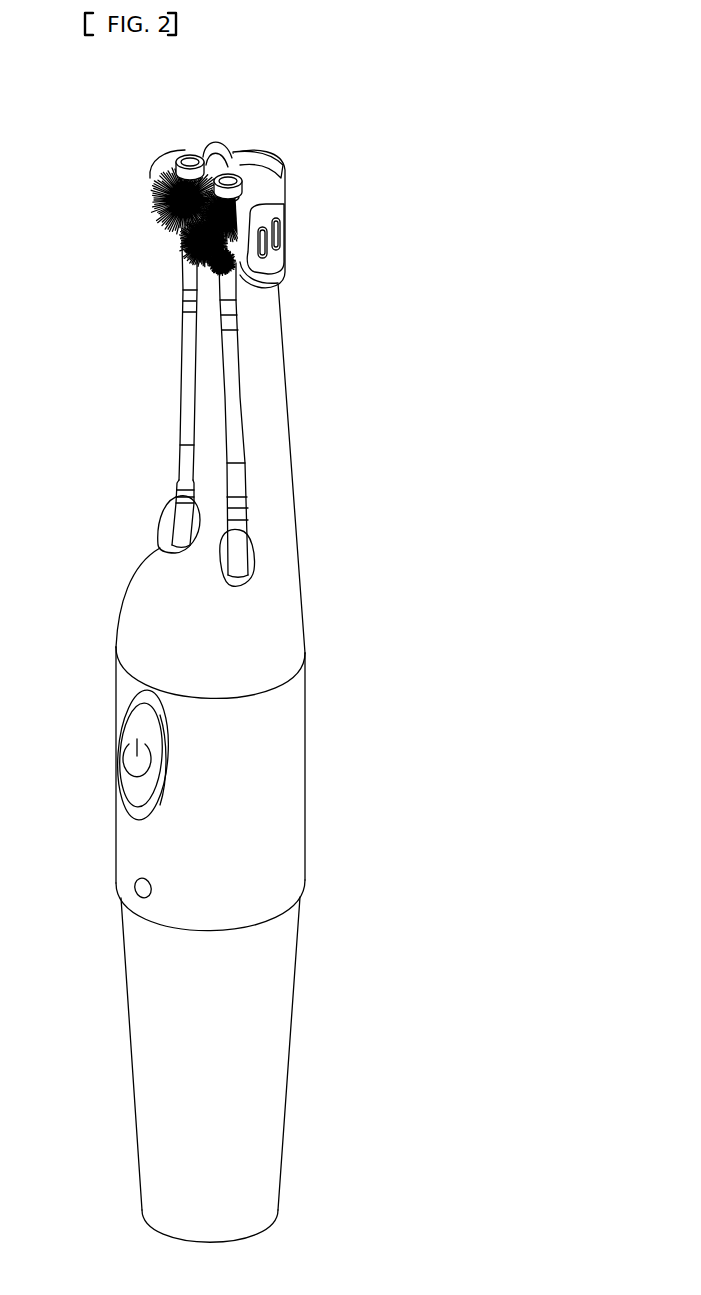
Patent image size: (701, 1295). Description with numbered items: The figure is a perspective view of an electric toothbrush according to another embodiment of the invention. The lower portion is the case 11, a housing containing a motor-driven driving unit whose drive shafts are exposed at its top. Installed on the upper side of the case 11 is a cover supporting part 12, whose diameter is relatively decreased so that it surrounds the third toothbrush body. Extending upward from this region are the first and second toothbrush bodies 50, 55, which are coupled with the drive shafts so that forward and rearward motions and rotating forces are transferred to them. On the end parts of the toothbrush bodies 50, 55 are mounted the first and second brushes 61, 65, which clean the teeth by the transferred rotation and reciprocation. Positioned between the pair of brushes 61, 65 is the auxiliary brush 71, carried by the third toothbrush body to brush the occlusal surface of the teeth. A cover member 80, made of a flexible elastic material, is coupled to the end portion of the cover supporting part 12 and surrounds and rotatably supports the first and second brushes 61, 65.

The case 11 is at (324, 766).
The cover supporting part 12 is at (285, 613).
The first toothbrush body 50 is at (183, 375).
The second toothbrush body 55 is at (232, 380).
The first brush 61 is at (155, 213).
The second brush 65 is at (270, 201).
The auxiliary brush 71 is at (258, 152).
The cover member 80 is at (293, 245).